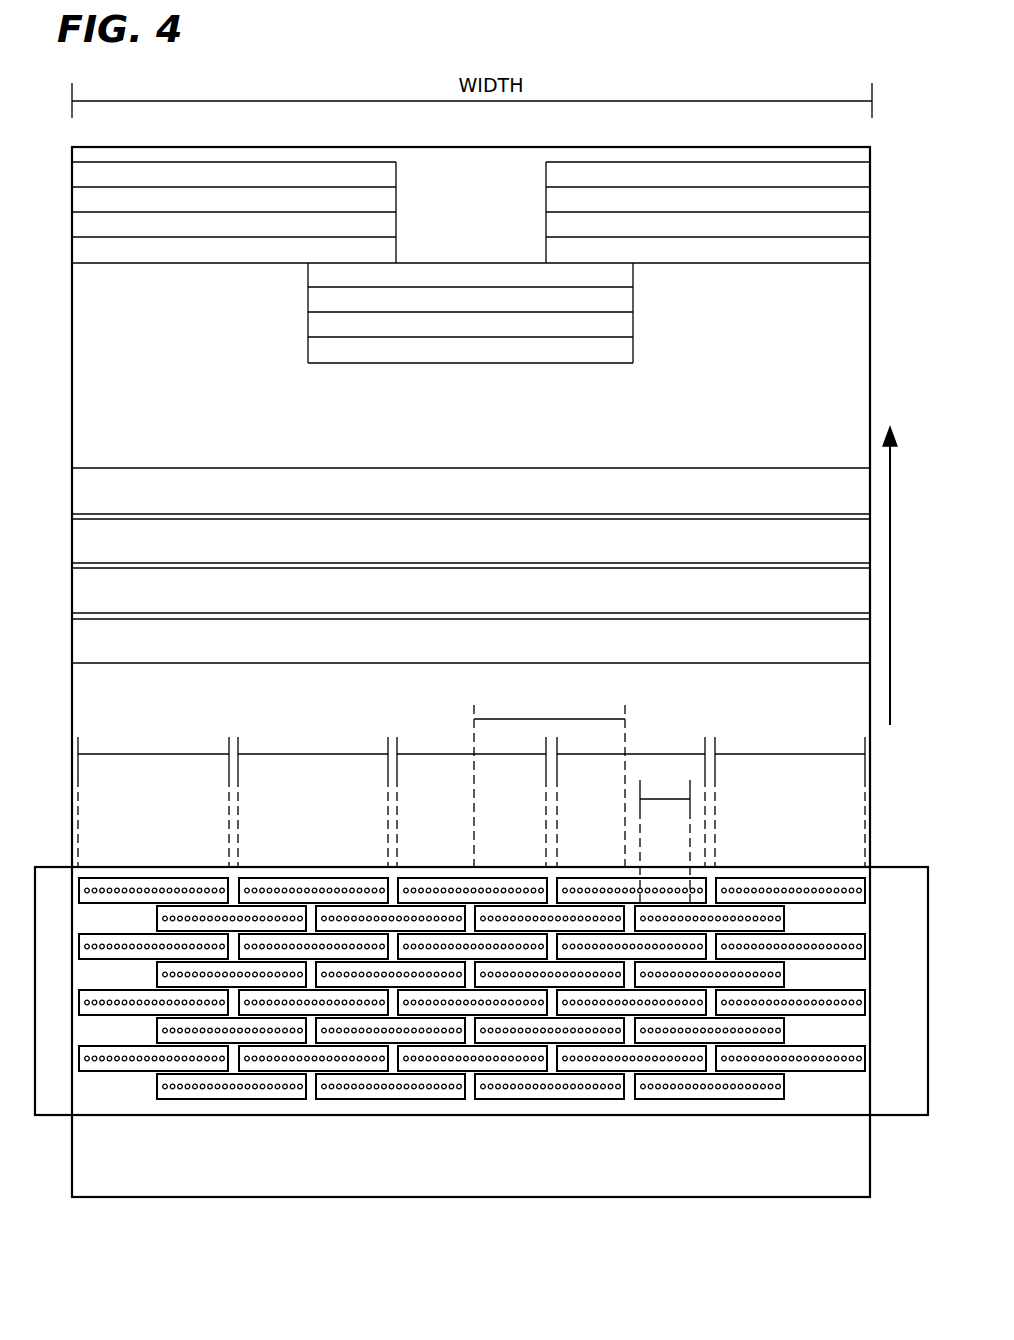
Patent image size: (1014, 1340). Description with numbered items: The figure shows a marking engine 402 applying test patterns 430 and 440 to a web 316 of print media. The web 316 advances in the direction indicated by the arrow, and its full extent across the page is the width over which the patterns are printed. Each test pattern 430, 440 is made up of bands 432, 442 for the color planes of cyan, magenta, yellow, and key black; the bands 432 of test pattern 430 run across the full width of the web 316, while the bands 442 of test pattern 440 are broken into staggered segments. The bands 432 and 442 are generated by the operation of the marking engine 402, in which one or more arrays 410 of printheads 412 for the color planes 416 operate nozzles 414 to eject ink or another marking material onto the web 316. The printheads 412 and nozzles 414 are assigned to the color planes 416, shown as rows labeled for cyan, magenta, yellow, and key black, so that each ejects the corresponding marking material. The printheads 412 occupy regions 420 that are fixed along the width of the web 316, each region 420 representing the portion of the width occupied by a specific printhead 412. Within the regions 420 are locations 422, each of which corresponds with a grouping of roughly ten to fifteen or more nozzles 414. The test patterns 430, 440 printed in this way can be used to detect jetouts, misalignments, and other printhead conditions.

The web of print media 316 is at (869, 401).
The marking engine 402 is at (758, 1128).
The array of printheads 410 is at (348, 1115).
The printhead 412 is at (182, 880).
The nozzles 414 is at (118, 888).
The color planes 416 is at (868, 878).
The regions 420 is at (471, 781).
The locations 422 is at (665, 840).
The test pattern 430 is at (66, 468).
The bands 432 is at (190, 468).
The test pattern 440 is at (66, 165).
The bands 442 is at (546, 163).